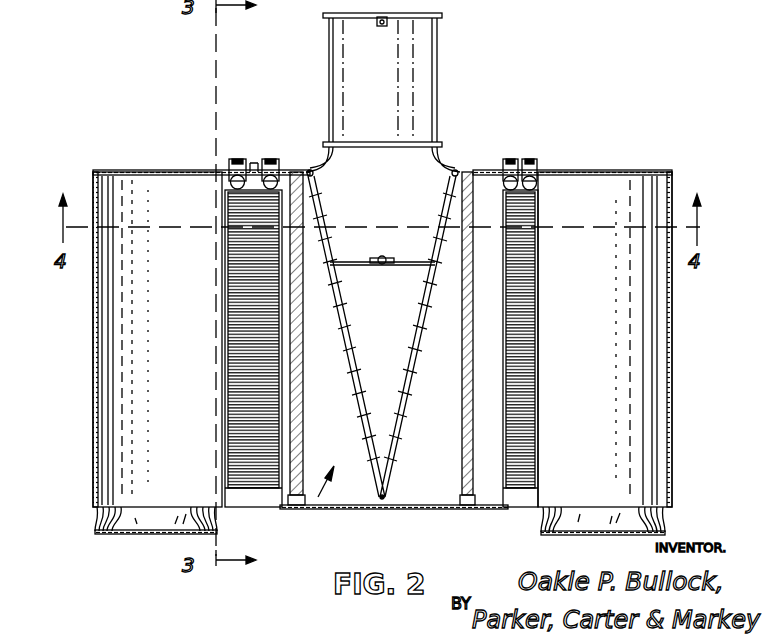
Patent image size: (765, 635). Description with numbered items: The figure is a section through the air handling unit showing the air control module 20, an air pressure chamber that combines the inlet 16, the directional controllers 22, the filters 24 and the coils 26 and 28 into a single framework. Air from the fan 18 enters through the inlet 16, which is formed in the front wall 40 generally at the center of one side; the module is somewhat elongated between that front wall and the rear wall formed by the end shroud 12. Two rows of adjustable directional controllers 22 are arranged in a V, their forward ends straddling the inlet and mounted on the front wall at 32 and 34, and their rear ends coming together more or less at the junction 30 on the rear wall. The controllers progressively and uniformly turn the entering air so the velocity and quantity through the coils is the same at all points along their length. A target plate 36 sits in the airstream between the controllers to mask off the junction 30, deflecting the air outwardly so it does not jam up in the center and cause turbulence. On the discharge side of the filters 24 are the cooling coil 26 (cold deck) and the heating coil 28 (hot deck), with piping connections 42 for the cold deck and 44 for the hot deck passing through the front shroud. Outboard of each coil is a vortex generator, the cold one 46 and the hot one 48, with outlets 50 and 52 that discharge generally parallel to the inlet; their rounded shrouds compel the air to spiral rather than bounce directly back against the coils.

The shroud 12 is at (410, 506).
The inlet 16 is at (408, 145).
The fan 18 is at (425, 62).
The air control module 20 is at (311, 508).
The directional controllers 22 is at (413, 332).
The filters 24 is at (294, 506).
The cooling coil 26 is at (258, 472).
The heating coil 28 is at (523, 472).
The junction of directional controllers 30 is at (382, 499).
The front wall mounting 32 is at (312, 170).
The front wall mounting 34 is at (457, 170).
The target plate 36 is at (384, 258).
The front wall 40 is at (535, 145).
The piping connections for cold deck 42 is at (272, 162).
The piping connections for hot deck 44 is at (530, 159).
The cold vortex generator 46 is at (158, 187).
The hot vortex generator 48 is at (611, 185).
The outlet 50 is at (138, 522).
The outlet 52 is at (655, 531).